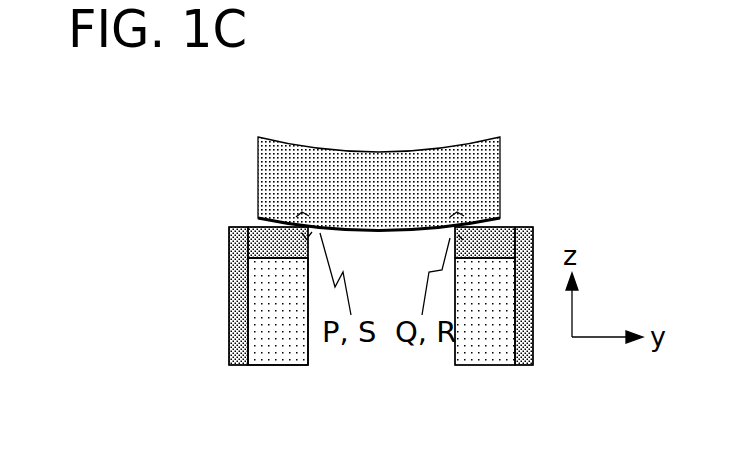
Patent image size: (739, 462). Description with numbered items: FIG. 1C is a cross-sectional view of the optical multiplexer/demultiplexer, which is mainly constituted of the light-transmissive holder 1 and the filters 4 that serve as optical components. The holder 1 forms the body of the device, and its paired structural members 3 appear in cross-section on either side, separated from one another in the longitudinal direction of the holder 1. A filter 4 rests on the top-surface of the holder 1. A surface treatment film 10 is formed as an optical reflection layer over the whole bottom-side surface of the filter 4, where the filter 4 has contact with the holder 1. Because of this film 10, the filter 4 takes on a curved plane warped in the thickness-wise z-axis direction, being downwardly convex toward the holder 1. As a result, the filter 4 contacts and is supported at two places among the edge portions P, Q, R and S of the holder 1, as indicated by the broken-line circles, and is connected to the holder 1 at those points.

The holder 1 is at (233, 320).
The structural members 3 is at (280, 357).
The filter 4 is at (372, 147).
The surface treatment film 10 is at (482, 225).